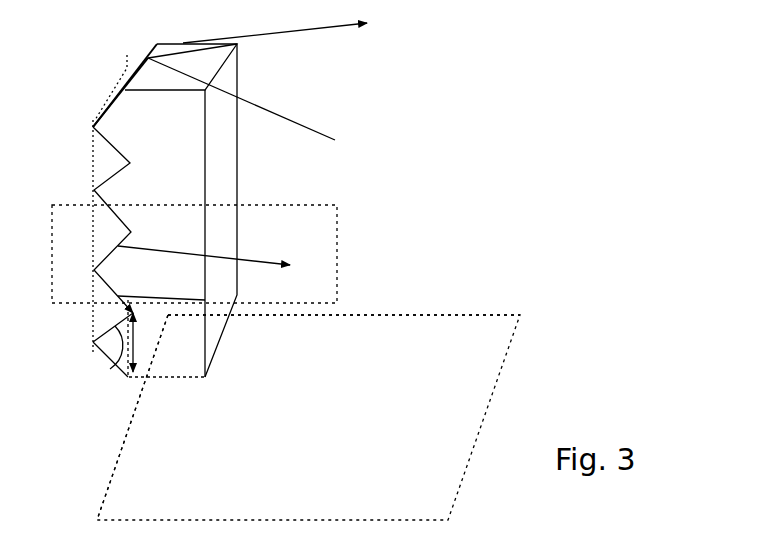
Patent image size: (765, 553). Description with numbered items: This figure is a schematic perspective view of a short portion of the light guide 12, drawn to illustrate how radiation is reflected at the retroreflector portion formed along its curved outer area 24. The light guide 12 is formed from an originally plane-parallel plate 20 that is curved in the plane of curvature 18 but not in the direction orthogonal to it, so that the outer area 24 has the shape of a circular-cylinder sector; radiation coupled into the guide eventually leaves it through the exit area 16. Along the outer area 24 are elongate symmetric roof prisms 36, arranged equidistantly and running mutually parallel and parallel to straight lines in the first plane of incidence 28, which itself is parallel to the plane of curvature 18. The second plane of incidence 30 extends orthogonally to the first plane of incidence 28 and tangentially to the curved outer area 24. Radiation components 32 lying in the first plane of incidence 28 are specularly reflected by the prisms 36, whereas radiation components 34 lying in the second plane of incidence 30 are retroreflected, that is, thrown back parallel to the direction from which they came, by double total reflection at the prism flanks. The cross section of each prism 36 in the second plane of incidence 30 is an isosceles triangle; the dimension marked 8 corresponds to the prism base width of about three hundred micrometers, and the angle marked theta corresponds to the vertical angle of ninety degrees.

The light guide 12 is at (183, 43).
The exit area 16 is at (172, 360).
The plane of curvature 18 is at (455, 333).
The plane-parallel plate 20 is at (170, 82).
The curved outer area 24 is at (100, 125).
The first plane of incidence 28 is at (395, 322).
The second plane of incidence 30 is at (333, 268).
The radiation components in the first plane of incidence 32 is at (298, 118).
The radiation components in the second plane of incidence 34 is at (258, 262).
The prisms 36 is at (102, 242).
The distance 8 is at (142, 342).
The angle theta is at (114, 347).